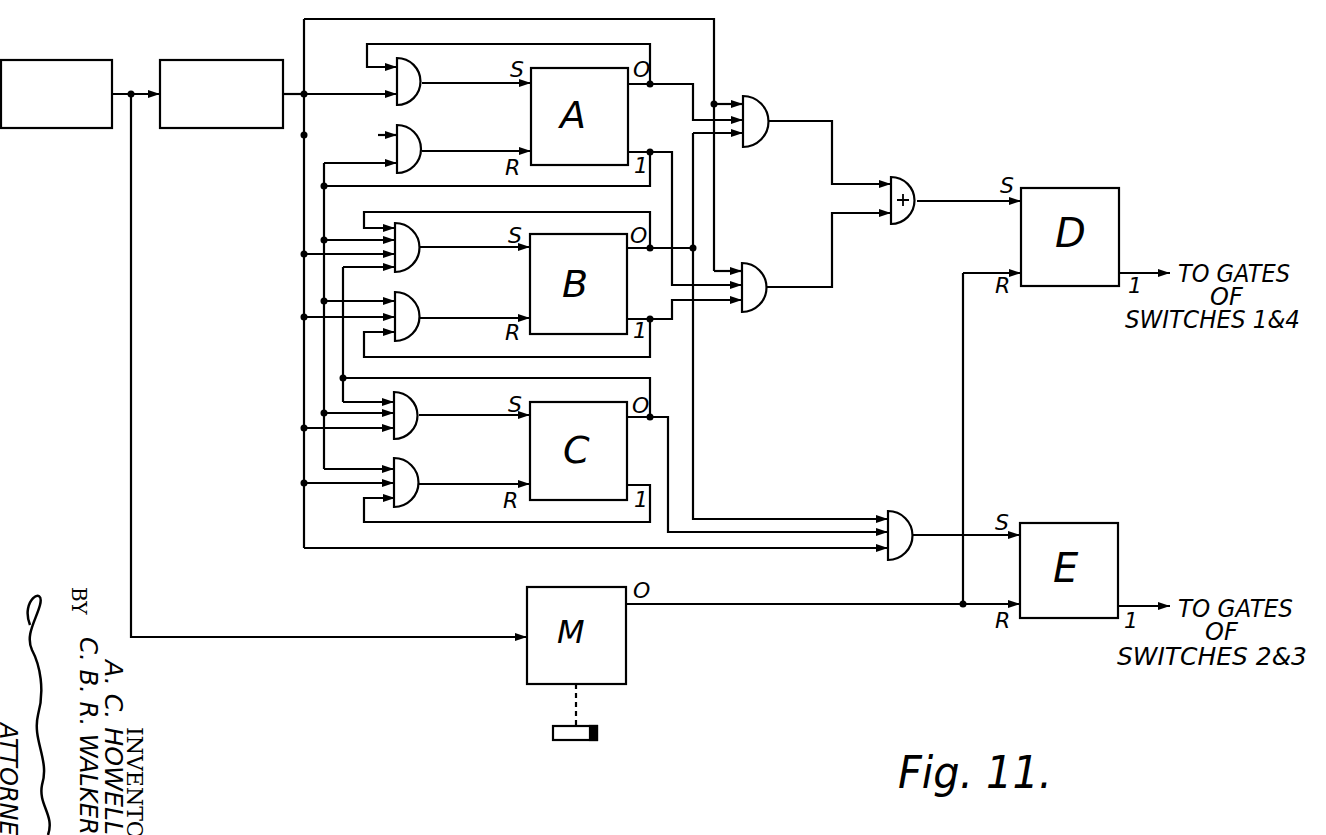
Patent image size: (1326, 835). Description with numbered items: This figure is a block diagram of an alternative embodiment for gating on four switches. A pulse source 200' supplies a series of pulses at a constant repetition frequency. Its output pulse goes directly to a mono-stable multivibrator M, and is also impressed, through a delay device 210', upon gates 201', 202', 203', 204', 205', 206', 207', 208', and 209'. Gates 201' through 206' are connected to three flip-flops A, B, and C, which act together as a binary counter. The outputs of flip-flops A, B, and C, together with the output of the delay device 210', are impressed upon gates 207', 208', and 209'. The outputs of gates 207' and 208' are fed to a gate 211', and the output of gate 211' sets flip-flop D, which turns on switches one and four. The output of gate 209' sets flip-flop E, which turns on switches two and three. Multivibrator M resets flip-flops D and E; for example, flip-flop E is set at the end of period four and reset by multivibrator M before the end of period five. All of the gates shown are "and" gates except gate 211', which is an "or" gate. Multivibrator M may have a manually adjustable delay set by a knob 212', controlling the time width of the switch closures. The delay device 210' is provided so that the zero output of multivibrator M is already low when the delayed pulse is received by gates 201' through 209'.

The pulse source 200' is at (56, 76).
The delay device 210' is at (221, 76).
The gate 201' is at (447, 85).
The gate 202' is at (447, 144).
The gate 203' is at (445, 252).
The gate 204' is at (444, 310).
The gate 205' is at (444, 419).
The gate 206' is at (443, 478).
The gate 207' is at (799, 105).
The gate 208' is at (788, 295).
The gate 209' is at (896, 506).
The gate 211' is at (911, 224).
The knob 212' is at (626, 712).